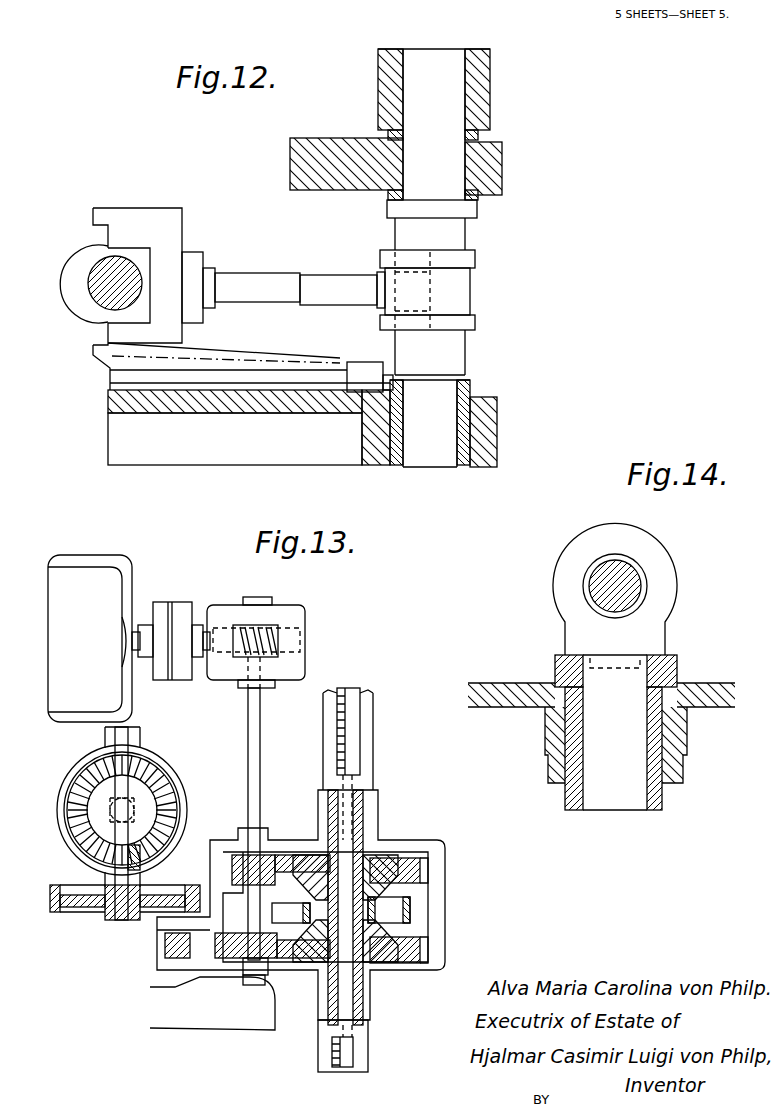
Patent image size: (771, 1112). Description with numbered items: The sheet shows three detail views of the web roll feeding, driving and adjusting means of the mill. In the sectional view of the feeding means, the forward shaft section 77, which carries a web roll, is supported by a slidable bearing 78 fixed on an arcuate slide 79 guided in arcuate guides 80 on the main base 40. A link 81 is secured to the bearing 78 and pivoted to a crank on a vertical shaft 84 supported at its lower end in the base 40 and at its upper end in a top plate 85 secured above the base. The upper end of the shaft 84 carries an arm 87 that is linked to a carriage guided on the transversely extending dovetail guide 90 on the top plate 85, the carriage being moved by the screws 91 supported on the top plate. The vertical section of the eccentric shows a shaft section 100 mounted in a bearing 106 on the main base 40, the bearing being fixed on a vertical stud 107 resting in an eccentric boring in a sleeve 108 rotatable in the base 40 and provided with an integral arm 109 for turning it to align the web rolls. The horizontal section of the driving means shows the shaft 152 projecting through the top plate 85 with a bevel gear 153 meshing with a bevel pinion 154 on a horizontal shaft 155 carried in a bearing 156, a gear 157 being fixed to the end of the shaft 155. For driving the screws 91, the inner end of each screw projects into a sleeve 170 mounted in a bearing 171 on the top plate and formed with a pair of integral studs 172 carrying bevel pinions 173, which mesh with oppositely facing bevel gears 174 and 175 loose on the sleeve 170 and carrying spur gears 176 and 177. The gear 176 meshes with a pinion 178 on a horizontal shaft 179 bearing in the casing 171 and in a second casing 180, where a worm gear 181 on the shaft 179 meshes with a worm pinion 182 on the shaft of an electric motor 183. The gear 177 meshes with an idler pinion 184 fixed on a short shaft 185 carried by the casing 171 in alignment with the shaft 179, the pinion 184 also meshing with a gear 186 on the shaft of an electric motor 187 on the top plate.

In FIG. 12, the main base 40 is at (478, 440).
In FIG. 14, the main base 40 is at (487, 685).
In FIG. 12, the forward shaft section 77 is at (100, 298).
In FIG. 12, the slidable bearing 78 is at (175, 237).
In FIG. 12, the arcuate slide 79 is at (295, 375).
In FIG. 12, the arcuate guides 80 is at (357, 362).
In FIG. 12, the link 81 is at (311, 282).
In FIG. 12, the vertical shaft 84 is at (470, 290).
In FIG. 12, the top plate 85 is at (502, 170).
In FIG. 12, the arm 87 is at (378, 50).
In FIG. 13, the dovetail guide 90 is at (374, 708).
In FIG. 13, the screws 91 is at (362, 735).
In FIG. 14, the shaft section 100 is at (630, 573).
In FIG. 14, the bearing 106 is at (668, 593).
In FIG. 14, the vertical stud 107 is at (603, 783).
In FIG. 14, the sleeve 108 is at (665, 740).
In FIG. 14, the integral arm 109 is at (678, 661).
In FIG. 13, the shaft 152 is at (167, 790).
In FIG. 13, the bevel gear 153 is at (172, 810).
In FIG. 13, the bevel pinion 154 is at (140, 852).
In FIG. 13, the horizontal shaft 155 is at (115, 825).
In FIG. 13, the bearing 156 is at (58, 770).
In FIG. 13, the gear 157 is at (73, 912).
In FIG. 13, the sleeve 170 is at (366, 815).
In FIG. 13, the bearing 171 is at (432, 845).
In FIG. 13, the integral studs 172 is at (382, 908).
In FIG. 13, the bevel pinions 173 is at (397, 893).
In FIG. 13, the bevel gear 174 is at (377, 880).
In FIG. 13, the bevel gear 175 is at (422, 945).
In FIG. 13, the spur gear 176 is at (422, 868).
In FIG. 13, the spur gear 177 is at (395, 963).
In FIG. 13, the pinion 178 is at (264, 868).
In FIG. 13, the horizontal shaft 179 is at (256, 765).
In FIG. 13, the second casing 180 is at (306, 626).
In FIG. 13, the worm gear 181 is at (222, 628).
In FIG. 13, the worm pinion 182 is at (272, 627).
In FIG. 13, the electric motor 183 is at (90, 638).
In FIG. 13, the idler pinion 184 is at (272, 966).
In FIG. 13, the short shaft 185 is at (252, 985).
In FIG. 13, the gear 186 is at (163, 948).
In FIG. 13, the electric motor 187 is at (165, 1012).